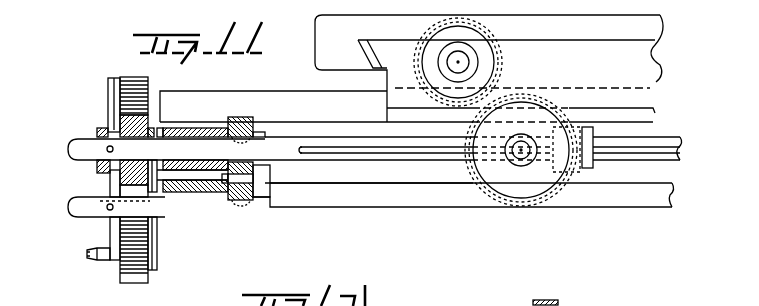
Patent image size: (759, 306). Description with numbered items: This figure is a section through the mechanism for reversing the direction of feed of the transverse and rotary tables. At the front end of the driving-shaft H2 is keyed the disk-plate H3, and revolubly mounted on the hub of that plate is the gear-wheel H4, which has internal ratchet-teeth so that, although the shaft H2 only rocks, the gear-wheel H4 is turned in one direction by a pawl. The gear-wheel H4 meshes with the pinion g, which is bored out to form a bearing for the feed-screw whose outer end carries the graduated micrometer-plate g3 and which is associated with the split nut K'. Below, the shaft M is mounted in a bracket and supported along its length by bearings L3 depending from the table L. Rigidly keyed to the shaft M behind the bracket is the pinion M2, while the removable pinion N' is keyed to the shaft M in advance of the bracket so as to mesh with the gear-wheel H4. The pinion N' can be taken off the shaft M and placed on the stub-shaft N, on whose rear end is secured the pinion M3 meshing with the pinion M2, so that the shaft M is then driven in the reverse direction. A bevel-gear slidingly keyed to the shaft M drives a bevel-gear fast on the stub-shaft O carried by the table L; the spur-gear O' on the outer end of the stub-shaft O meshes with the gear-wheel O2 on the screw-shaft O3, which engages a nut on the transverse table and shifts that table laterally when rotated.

The split nut K' is at (472, 63).
The bearings L3 is at (567, 113).
The table L is at (637, 20).
The gear-wheel O2 is at (496, 62).
The screw-shaft O3 is at (470, 57).
The stub-shaft O is at (521, 170).
The spur-gear O' is at (521, 165).
The shaft M is at (473, 155).
The pinion M2 is at (247, 114).
The pinion M3 is at (255, 226).
The driving-shaft H2 is at (431, 207).
The disk-plate H3 is at (112, 128).
The gear-wheel H4 is at (122, 261).
The pinion g is at (150, 104).
The micrometer-plate g3 is at (110, 85).
The stub-shaft N is at (138, 209).
The pinion N' is at (85, 215).